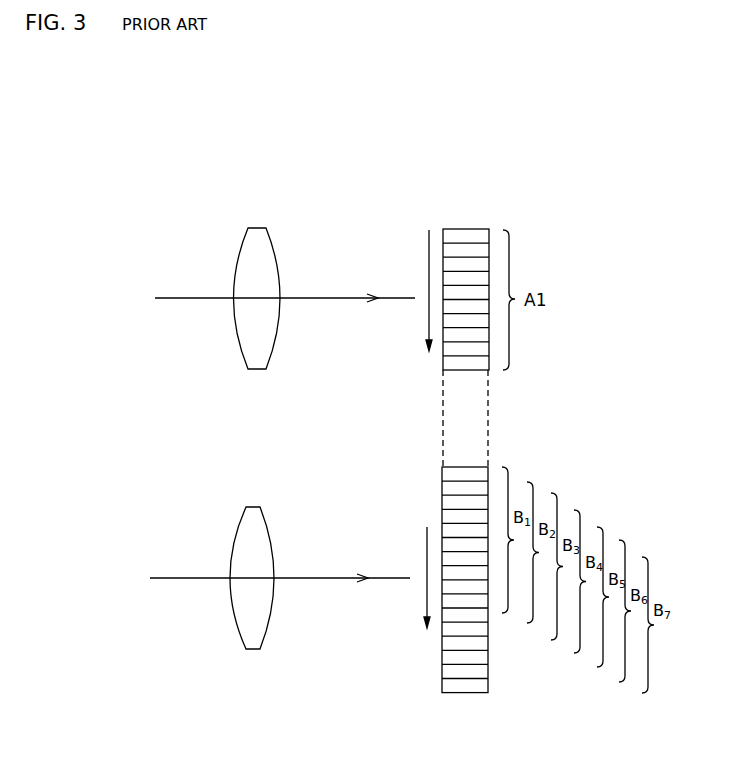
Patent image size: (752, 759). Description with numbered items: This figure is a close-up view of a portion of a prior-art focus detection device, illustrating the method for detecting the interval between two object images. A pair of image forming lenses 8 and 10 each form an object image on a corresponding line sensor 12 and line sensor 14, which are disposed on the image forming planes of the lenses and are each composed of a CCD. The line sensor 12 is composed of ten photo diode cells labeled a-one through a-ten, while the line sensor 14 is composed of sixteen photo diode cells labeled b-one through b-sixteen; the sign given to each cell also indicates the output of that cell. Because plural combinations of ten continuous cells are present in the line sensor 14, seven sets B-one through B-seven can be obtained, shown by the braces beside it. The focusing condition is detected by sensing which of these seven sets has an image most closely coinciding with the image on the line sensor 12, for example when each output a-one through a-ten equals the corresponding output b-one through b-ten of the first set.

The image forming lens 8 is at (262, 228).
The image forming lens 10 is at (252, 651).
The line sensor 12 is at (478, 229).
The line sensor 14 is at (477, 466).